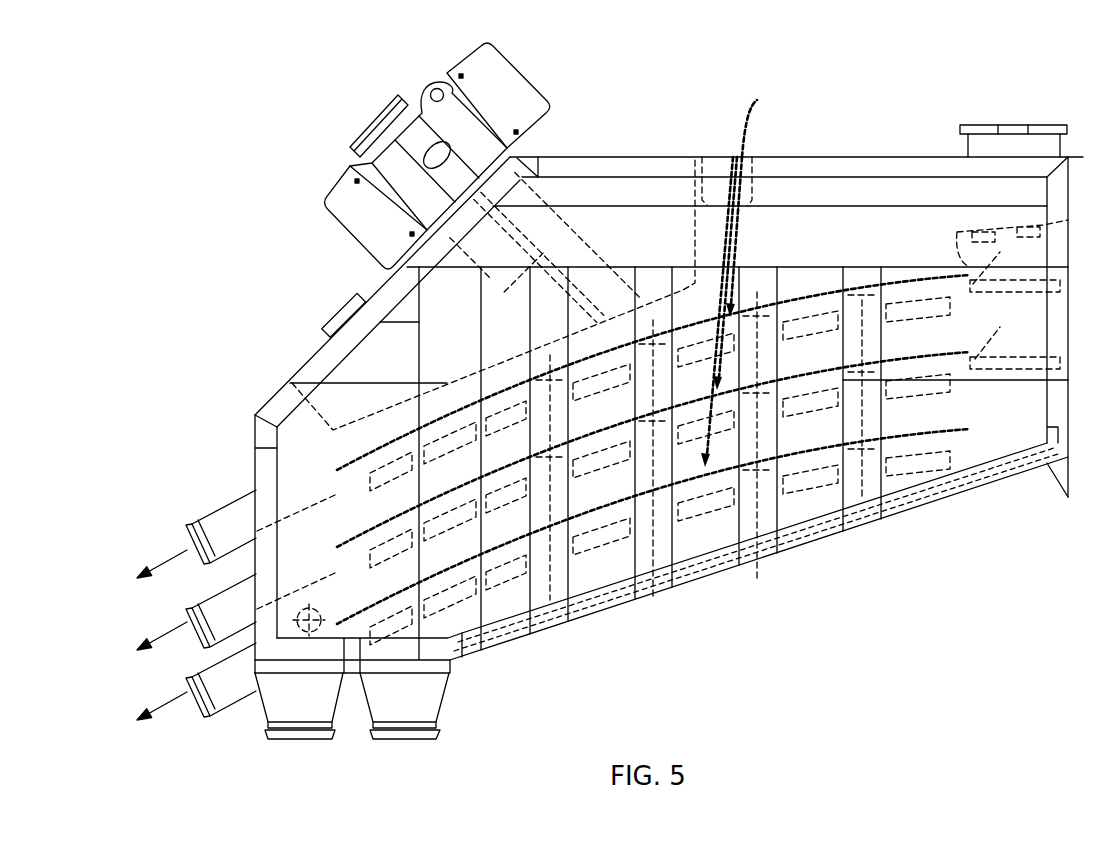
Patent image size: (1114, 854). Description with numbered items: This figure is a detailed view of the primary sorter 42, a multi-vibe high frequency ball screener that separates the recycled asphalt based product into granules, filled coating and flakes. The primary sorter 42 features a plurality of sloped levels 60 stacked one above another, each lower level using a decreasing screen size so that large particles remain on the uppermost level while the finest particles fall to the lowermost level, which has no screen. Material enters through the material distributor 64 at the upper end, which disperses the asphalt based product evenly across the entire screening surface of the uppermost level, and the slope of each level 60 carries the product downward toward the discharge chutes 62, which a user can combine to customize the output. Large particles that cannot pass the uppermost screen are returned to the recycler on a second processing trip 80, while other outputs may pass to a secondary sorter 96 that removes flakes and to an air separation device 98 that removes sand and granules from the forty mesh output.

The primary sorter 42 is at (256, 73).
The levels 60 is at (757, 100).
The discharge chutes 62 is at (210, 590).
The material distributor 64 is at (1048, 125).
The second processing trip 80 is at (162, 565).
The secondary sorter 96 is at (162, 639).
The air separation device 98 is at (162, 709).